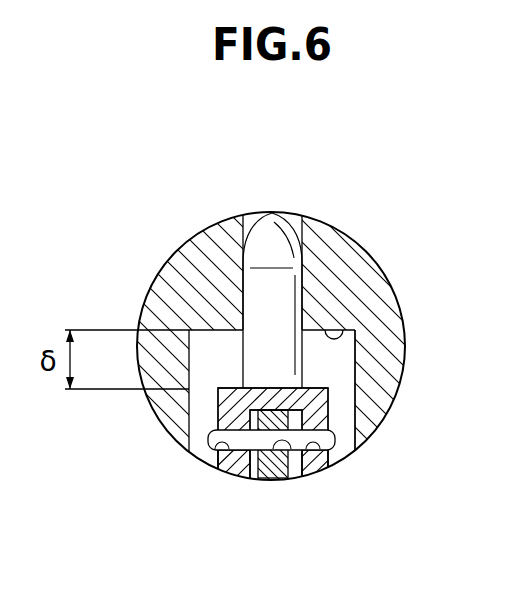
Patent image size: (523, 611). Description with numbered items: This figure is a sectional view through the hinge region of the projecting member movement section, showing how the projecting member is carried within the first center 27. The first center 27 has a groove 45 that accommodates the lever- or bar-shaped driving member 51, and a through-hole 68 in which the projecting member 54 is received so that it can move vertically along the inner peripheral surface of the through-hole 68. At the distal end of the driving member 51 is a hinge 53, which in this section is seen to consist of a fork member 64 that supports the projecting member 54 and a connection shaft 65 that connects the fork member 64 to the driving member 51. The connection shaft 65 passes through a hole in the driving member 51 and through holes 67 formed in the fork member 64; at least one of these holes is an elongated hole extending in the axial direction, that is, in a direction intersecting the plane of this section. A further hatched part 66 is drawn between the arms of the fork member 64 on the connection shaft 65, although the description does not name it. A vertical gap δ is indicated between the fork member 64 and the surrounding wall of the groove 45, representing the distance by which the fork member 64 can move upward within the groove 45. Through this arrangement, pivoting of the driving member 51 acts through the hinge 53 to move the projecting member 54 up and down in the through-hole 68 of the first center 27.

The first center 27 is at (168, 250).
The groove 45 is at (355, 328).
The driving member 51 is at (270, 480).
The hinge 53 is at (208, 420).
The projecting member 54 is at (270, 216).
The fork member 64 is at (328, 402).
The connection shaft 65 is at (336, 442).
The intermediate member 66 is at (295, 455).
The holes 67 is at (214, 452).
The through-hole 68 is at (250, 216).